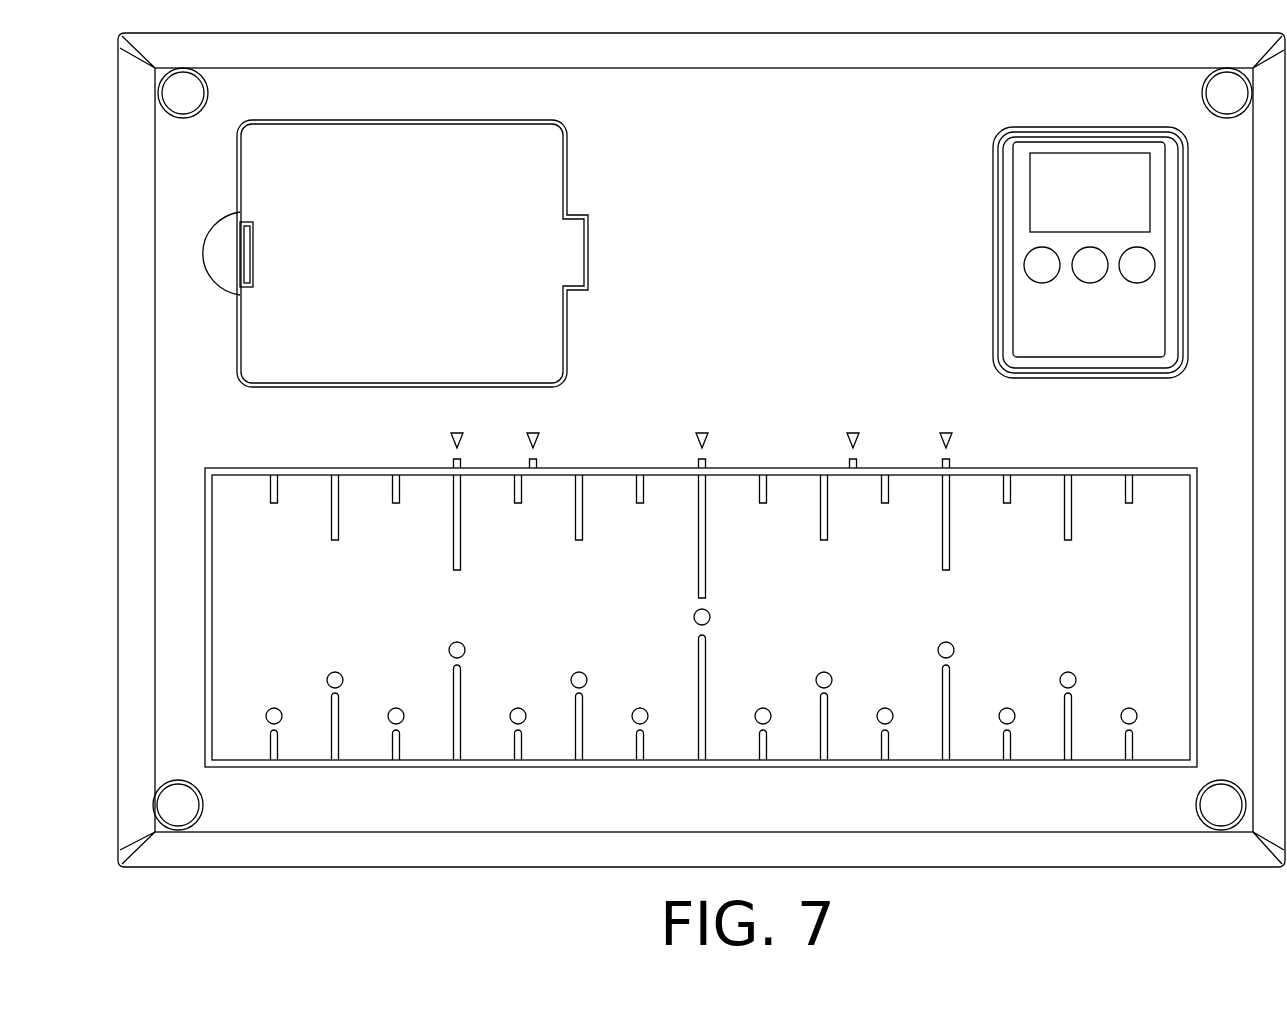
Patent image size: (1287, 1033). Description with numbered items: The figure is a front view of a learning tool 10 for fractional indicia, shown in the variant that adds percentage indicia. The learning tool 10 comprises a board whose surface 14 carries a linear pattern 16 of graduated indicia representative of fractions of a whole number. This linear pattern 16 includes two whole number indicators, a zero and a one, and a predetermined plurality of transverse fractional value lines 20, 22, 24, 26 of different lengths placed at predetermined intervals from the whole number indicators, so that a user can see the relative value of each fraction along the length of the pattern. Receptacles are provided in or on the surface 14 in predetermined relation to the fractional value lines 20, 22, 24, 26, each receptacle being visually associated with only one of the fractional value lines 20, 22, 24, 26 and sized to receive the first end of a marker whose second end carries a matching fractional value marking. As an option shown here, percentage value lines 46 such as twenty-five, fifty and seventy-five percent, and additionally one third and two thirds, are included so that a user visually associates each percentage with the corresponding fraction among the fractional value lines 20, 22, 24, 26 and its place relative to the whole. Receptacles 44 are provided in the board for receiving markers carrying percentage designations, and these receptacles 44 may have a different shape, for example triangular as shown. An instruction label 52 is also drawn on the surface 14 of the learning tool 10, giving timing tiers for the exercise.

The learning tool 10 is at (297, 887).
The surface 14 is at (515, 802).
The linear pattern 16 is at (381, 768).
The fractional value line 20 is at (706, 560).
The fractional value line 22 is at (980, 560).
The fractional value line 24 is at (1102, 550).
The fractional value line 26 is at (1033, 512).
The receptacle 44 is at (946, 432).
The percentage value line 46 is at (942, 462).
The instruction label 52 is at (777, 172).